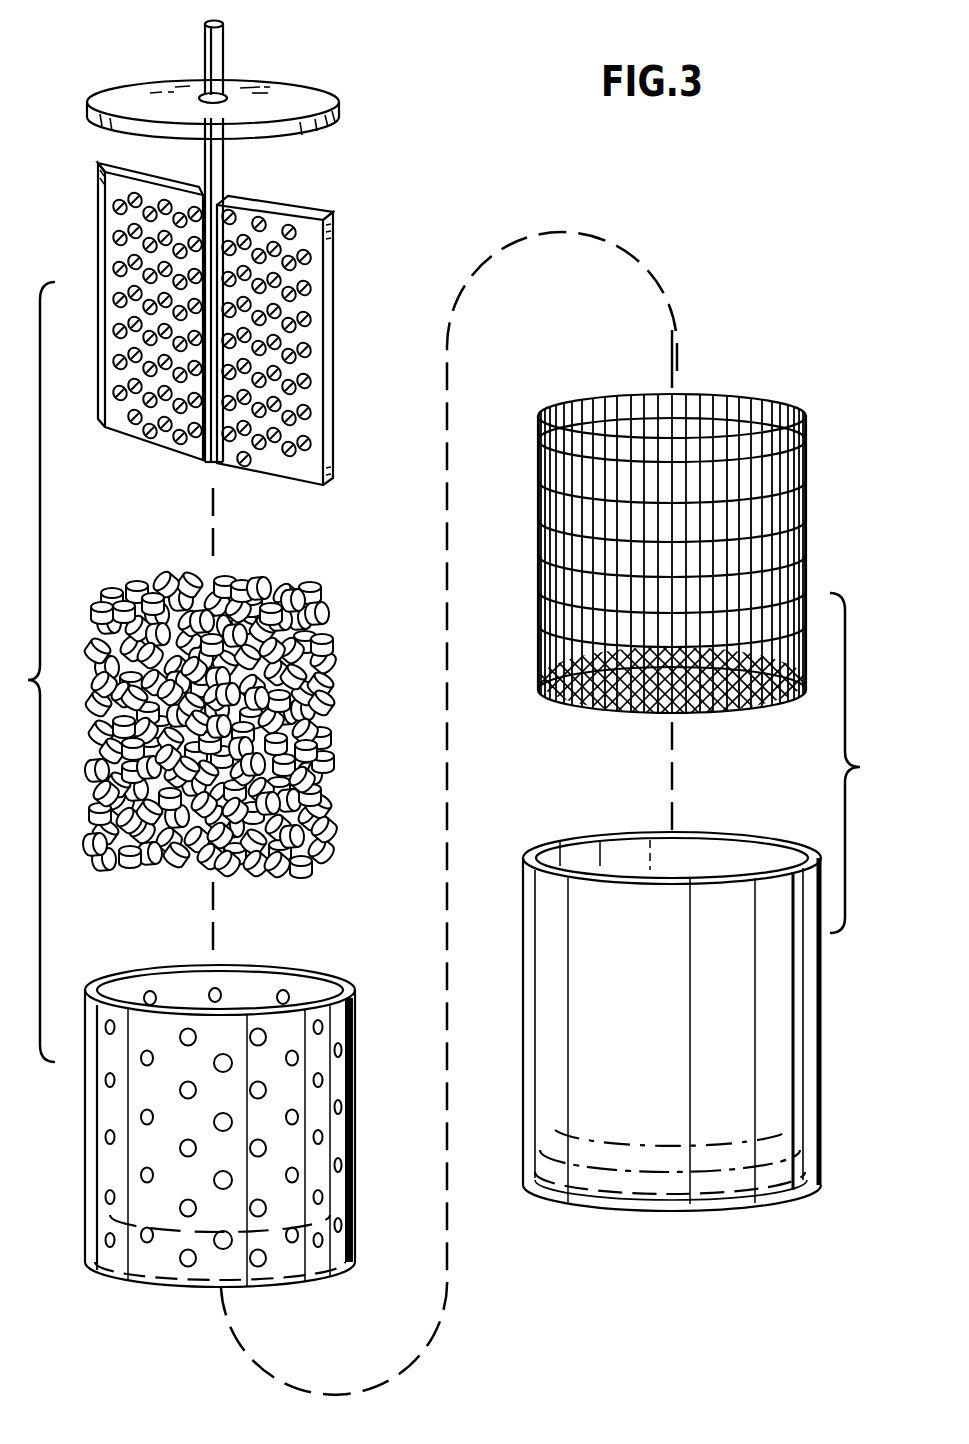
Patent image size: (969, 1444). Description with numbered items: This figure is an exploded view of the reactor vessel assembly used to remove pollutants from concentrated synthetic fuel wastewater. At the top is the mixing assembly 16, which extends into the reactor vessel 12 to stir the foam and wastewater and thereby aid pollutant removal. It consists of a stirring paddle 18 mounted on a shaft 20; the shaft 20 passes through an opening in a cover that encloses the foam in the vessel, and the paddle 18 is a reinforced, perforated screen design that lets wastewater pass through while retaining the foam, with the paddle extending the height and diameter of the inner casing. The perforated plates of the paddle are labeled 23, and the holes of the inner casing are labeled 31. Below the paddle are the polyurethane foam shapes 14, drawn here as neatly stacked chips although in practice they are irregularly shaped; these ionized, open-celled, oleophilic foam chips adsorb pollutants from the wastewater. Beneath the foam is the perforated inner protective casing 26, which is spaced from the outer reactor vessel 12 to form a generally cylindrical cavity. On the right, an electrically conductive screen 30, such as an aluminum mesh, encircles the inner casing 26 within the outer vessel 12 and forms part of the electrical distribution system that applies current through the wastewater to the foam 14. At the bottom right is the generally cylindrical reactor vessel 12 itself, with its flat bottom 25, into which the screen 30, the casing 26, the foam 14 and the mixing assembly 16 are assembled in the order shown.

The mixing assembly 16 is at (322, 150).
The shaft 20 is at (226, 152).
The perforated plates 23 is at (100, 183).
The stirring paddle 18 is at (279, 310).
The polyurethane foam shapes 14 is at (333, 598).
The perforated inner protective casing 26 is at (338, 982).
The cylinder holes 31 is at (340, 1112).
The electrically conductive screen 30 is at (738, 393).
The reactor vessel 12 is at (822, 992).
The flat bottom 25 is at (762, 1205).